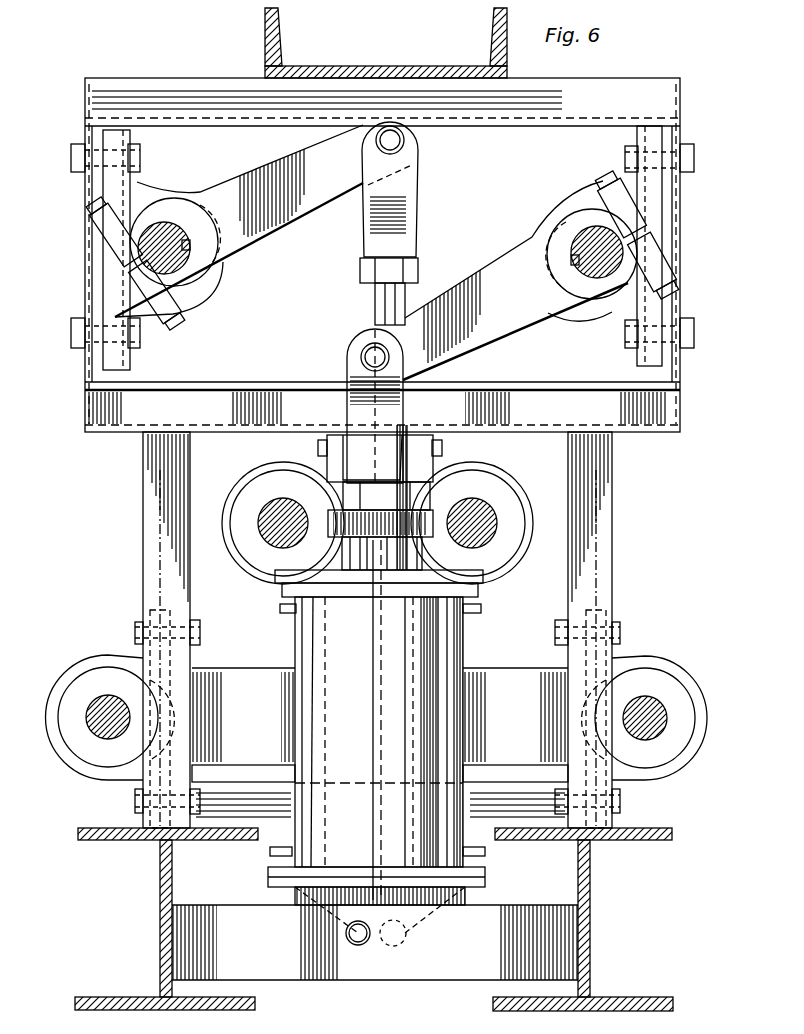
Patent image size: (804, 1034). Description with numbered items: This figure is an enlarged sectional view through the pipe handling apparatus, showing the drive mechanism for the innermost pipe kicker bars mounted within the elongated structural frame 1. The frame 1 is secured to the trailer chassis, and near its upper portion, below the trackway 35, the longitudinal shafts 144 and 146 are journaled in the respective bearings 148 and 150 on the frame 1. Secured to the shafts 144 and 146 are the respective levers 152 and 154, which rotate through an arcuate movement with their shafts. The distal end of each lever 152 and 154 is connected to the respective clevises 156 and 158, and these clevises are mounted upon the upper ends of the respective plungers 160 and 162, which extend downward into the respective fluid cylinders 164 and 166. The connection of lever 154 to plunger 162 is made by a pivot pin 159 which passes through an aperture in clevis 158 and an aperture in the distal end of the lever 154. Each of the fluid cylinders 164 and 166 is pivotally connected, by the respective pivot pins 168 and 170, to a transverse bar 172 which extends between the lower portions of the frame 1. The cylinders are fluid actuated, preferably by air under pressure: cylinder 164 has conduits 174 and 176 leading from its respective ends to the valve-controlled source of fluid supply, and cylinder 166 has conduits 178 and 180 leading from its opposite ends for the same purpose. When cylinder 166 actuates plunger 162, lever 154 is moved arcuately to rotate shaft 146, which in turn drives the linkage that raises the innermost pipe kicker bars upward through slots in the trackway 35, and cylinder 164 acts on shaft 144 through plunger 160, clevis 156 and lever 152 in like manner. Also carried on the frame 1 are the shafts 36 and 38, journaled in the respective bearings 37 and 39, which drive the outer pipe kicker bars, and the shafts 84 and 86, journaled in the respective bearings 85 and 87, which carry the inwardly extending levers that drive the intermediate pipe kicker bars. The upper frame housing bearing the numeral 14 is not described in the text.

The elongated structural frame 1 is at (76, 830).
The upper frame housing 14 is at (148, 74).
The trackway 35 is at (274, 14).
The shaft 36 is at (488, 512).
The bearing 37 is at (500, 562).
The shaft 38 is at (278, 510).
The bearing 39 is at (250, 562).
The shaft 84 is at (665, 704).
The bearing 85 is at (693, 740).
The shaft 86 is at (90, 704).
The bearing 87 is at (60, 742).
The longitudinal shaft 144 is at (180, 262).
The longitudinal shaft 146 is at (575, 236).
The bearing 148 is at (222, 274).
The bearing 150 is at (606, 310).
The lever 152 is at (272, 222).
The lever 154 is at (470, 338).
The clevis 156 is at (403, 186).
The clevis 158 is at (357, 447).
The pivot pin 159 is at (363, 357).
The plunger 160 is at (380, 302).
The plunger 162 is at (418, 490).
The fluid cylinder 164 is at (465, 662).
The fluid cylinder 166 is at (427, 702).
The pivot pin 168 is at (395, 948).
The pivot pin 170 is at (360, 946).
The transverse bar 172 is at (572, 932).
The conduit 174 is at (485, 855).
The conduit 176 is at (480, 611).
The conduit 178 is at (272, 852).
The conduit 180 is at (282, 610).